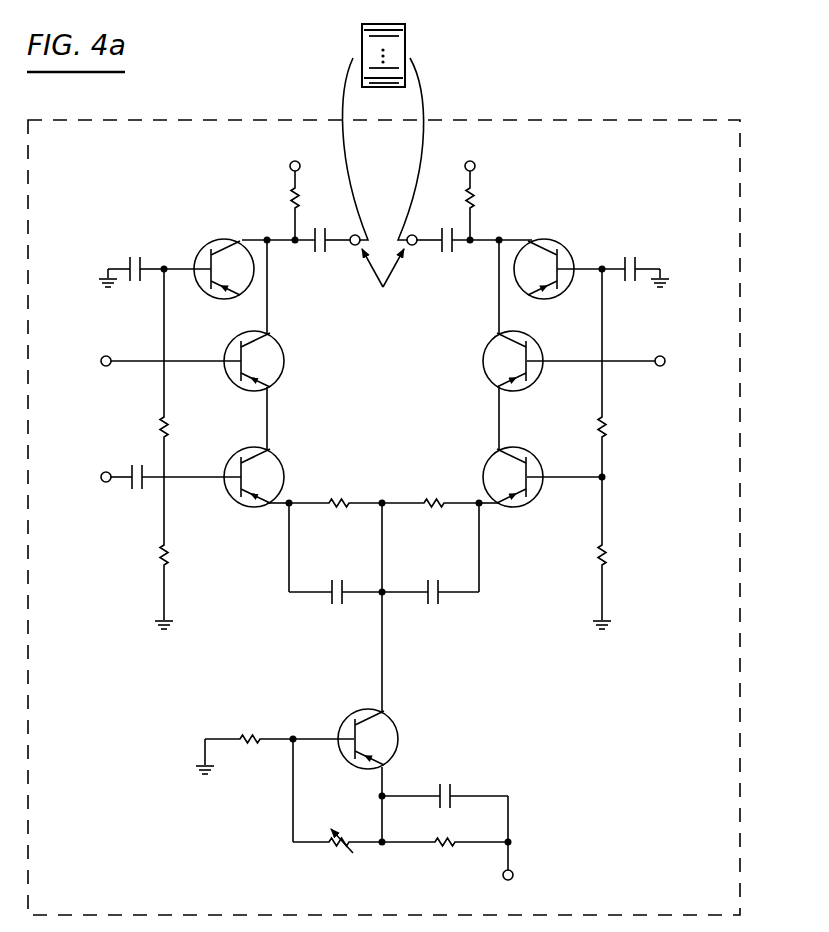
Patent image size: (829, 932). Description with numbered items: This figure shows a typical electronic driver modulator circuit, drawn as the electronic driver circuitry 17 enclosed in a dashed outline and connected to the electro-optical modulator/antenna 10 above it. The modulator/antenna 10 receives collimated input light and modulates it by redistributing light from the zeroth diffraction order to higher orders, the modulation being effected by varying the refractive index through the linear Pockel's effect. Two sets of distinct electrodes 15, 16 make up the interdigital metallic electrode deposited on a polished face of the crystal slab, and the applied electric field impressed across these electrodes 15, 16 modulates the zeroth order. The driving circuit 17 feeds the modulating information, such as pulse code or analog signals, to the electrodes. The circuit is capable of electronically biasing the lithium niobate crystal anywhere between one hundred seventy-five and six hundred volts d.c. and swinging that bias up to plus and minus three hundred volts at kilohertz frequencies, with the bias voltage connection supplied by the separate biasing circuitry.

The electro-optical modulator/antenna 10 is at (379, 43).
The first set of distinct electrodes 15 is at (362, 35).
The second set of distinct electrodes 16 is at (405, 43).
The electronic driver modulator circuitry 17 is at (533, 108).